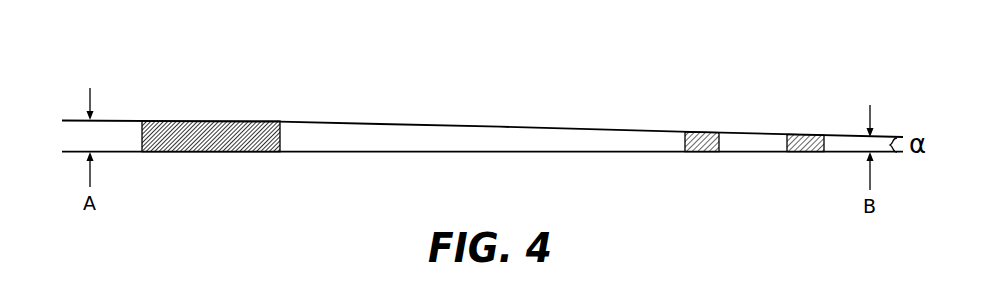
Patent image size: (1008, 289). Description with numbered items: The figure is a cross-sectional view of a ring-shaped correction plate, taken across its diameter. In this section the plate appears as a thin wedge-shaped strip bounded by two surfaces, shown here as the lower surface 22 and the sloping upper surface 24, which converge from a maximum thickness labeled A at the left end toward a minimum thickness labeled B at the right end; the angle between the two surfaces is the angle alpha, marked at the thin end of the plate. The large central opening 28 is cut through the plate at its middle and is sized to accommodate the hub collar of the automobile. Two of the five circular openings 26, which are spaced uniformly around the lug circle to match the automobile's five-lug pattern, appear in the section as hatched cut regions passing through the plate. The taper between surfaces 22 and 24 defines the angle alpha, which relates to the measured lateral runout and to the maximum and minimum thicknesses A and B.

The substrate 22 is at (531, 156).
The top surface layer 24 is at (606, 129).
The openings 26 is at (721, 144).
The opening 28 is at (283, 133).